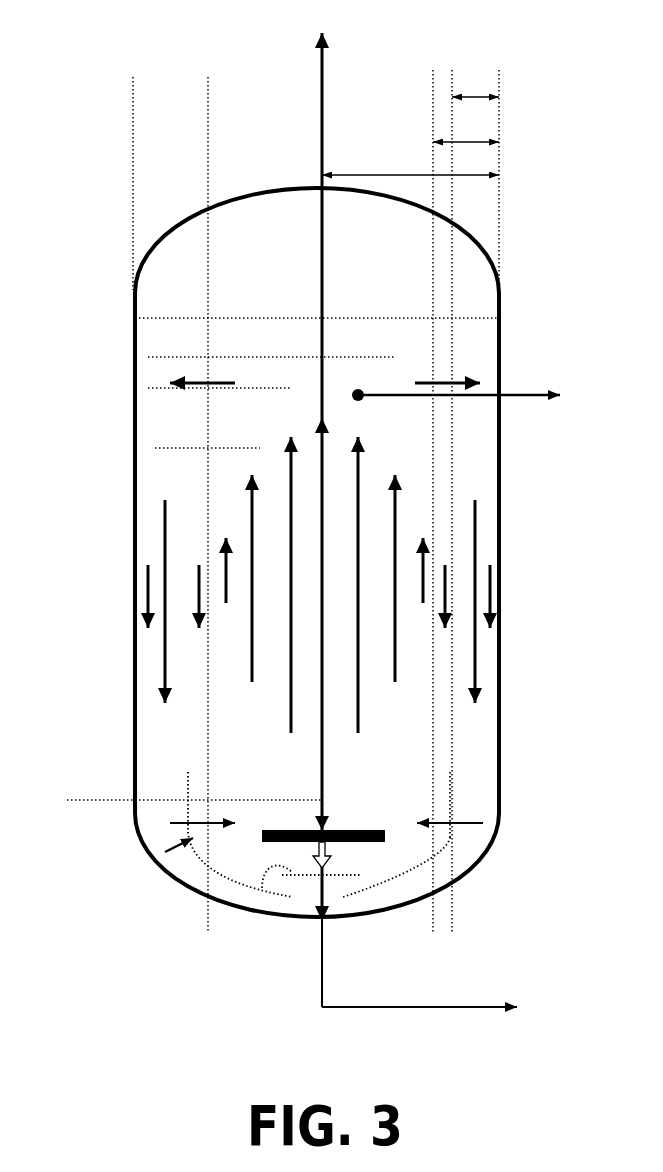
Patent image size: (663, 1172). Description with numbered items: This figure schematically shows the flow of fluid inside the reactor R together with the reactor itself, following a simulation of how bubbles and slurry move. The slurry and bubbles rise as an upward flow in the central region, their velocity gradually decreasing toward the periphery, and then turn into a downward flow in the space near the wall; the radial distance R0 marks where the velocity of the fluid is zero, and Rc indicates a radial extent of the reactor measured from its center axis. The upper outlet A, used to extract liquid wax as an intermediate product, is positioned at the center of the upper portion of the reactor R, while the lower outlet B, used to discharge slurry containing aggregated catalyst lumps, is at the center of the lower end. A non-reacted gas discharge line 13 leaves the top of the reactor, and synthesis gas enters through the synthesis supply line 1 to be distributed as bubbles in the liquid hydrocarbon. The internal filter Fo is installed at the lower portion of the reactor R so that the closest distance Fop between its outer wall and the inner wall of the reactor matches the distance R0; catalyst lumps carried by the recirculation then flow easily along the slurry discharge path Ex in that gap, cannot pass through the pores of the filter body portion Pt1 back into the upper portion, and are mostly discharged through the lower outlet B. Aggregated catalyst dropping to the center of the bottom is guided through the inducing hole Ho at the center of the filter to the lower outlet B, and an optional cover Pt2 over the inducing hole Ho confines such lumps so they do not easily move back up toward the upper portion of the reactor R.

The non-reacted gas discharge line 13 is at (320, 85).
The reactor R is at (132, 377).
The closest distance between the outer wall of the internal filter and the inner wal Fop is at (475, 74).
The distance in which a velocity of the fluid is 0 R0 is at (466, 130).
The inner radius of the vessel Rc is at (410, 163).
The upper outlet A is at (362, 387).
The inducing hole Ho is at (308, 892).
The lower outlet B is at (323, 920).
The slurry discharge path Ex is at (160, 785).
The body portion Pt1 is at (228, 880).
The cover Pt2 is at (262, 885).
The internal filter Fo is at (165, 852).
The synthesis supply line 1 is at (78, 797).